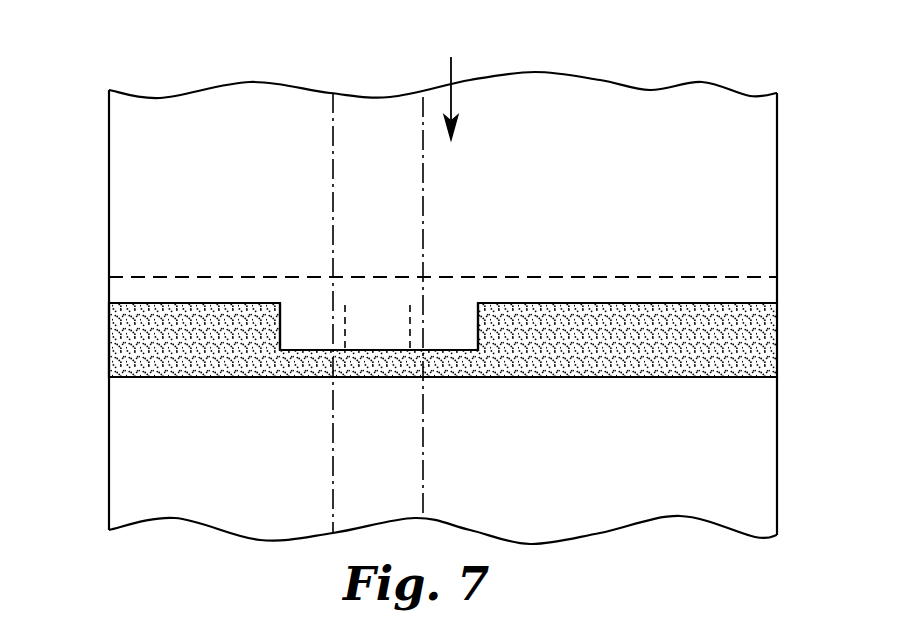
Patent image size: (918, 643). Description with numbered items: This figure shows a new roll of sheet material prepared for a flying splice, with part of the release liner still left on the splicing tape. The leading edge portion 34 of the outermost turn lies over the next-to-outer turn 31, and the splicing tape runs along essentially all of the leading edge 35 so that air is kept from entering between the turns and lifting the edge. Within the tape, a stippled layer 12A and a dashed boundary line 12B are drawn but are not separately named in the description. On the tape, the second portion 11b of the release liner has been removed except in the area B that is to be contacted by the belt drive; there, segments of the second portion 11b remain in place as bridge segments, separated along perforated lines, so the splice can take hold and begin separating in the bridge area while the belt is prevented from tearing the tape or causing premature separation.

The leading edge portion 34 is at (122, 209).
The leading edge 35 is at (123, 307).
The next-to-outer turn 31 is at (123, 480).
The first layer 12A is at (765, 336).
The second layer boundary 12B is at (765, 290).
The second portion of release liner 11b is at (296, 311).
The area B is at (331, 125).